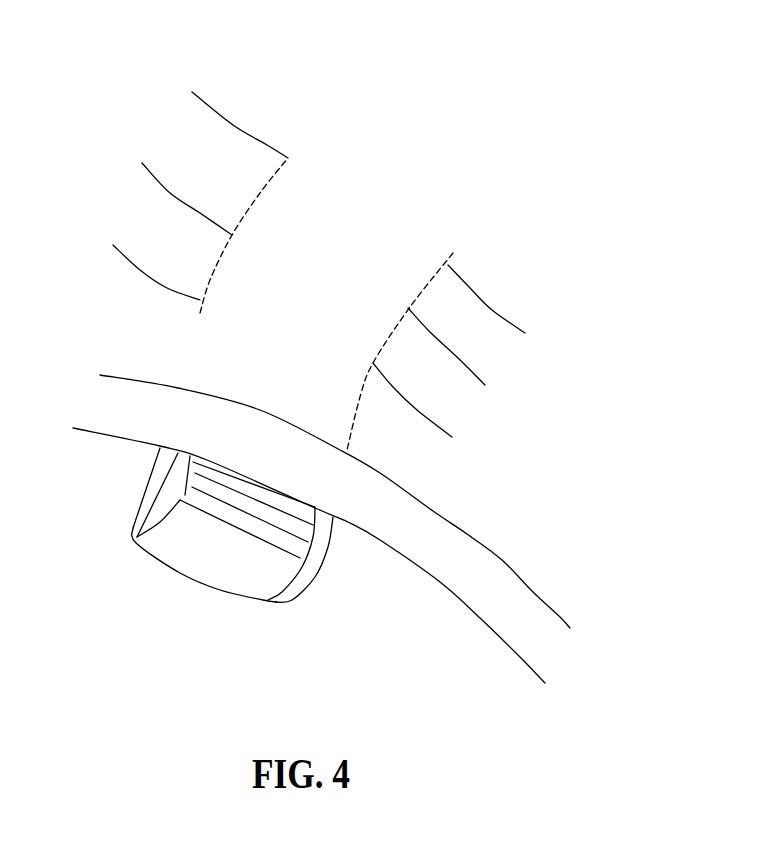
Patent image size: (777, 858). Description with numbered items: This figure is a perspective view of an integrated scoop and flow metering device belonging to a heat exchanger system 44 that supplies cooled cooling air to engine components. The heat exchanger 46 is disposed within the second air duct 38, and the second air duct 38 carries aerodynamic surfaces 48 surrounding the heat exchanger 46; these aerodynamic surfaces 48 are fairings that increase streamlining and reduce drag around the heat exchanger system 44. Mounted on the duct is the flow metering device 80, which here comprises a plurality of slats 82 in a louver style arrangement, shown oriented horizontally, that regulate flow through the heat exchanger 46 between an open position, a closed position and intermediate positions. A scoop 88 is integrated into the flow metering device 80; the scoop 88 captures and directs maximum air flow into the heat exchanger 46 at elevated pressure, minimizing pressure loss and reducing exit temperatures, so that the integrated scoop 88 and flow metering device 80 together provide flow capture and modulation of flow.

The second air duct 38 is at (450, 559).
The heat exchanger system 44 is at (323, 251).
The heat exchanger 46 is at (323, 279).
The aerodynamic surfaces 48 is at (185, 233).
The flow metering device 80 is at (200, 507).
The slats 82 is at (250, 500).
The scoop 88 is at (230, 555).